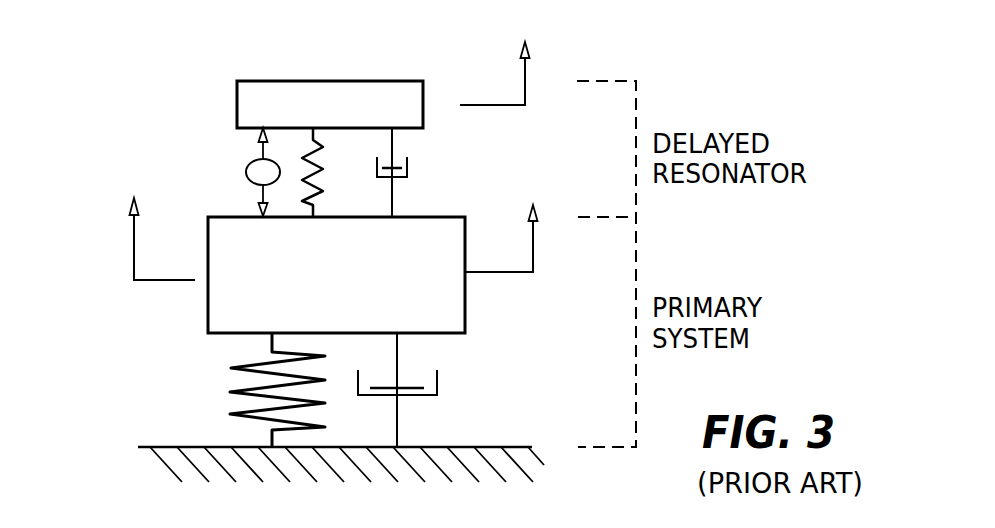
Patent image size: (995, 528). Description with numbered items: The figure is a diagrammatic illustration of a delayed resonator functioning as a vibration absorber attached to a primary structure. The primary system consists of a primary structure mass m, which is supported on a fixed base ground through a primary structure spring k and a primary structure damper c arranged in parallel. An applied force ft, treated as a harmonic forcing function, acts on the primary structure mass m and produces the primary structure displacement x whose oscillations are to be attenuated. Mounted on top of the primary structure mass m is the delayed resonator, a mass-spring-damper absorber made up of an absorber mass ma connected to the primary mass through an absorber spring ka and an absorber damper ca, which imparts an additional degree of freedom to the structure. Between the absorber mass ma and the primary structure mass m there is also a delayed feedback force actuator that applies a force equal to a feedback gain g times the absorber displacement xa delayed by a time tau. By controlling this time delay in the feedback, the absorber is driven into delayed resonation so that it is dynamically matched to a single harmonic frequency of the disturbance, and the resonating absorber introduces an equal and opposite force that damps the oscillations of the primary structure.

The absorber mass ma is at (330, 104).
The absorber spring ka is at (334, 172).
The absorber damper ca is at (413, 172).
The primary structure mass m is at (336, 275).
The primary structure spring k is at (290, 390).
The primary structure damper c is at (397, 390).
The delayed feedback force actuator is at (171, 172).
The applied force ft is at (134, 239).
The absorber displacement xa is at (516, 73).
The primary structure displacement x is at (516, 238).
The fixed base ground is at (341, 464).